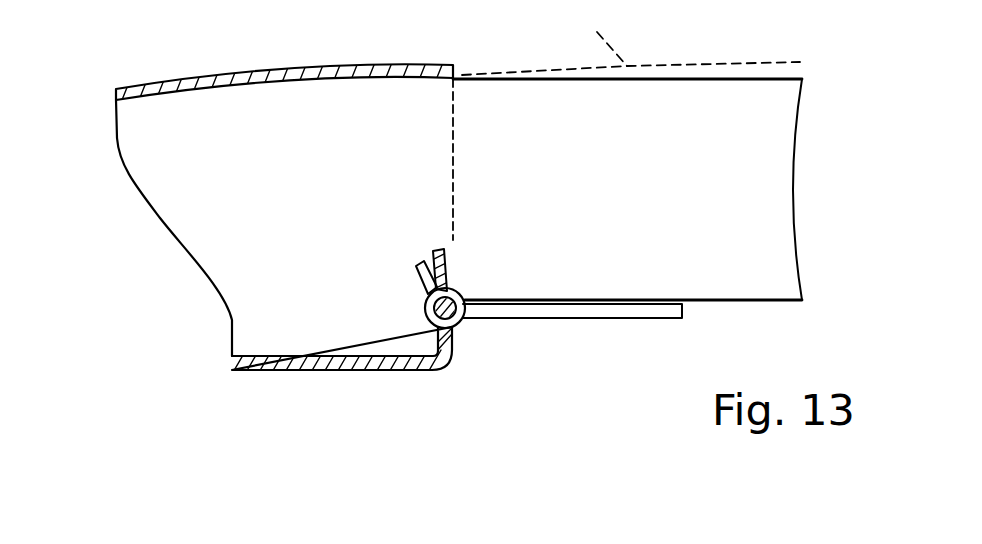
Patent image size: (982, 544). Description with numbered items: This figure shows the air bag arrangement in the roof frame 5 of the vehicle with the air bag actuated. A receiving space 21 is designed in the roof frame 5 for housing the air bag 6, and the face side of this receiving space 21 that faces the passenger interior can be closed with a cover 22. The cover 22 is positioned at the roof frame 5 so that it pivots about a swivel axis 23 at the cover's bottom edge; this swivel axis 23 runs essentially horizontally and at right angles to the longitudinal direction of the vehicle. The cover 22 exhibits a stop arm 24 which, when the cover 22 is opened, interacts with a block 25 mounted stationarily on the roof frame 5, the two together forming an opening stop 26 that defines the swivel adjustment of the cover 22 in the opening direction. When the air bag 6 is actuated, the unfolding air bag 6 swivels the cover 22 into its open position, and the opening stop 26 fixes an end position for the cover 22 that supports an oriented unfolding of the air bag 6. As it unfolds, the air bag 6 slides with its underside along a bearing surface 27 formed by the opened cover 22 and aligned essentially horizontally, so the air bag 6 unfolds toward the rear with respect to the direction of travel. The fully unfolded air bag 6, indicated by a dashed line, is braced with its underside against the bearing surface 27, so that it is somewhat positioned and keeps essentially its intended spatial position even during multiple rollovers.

The roof frame 5 is at (282, 362).
The air bag 6 is at (612, 92).
The receiving space 21 is at (288, 204).
The cover 22 is at (612, 315).
The swivel axis 23 is at (463, 316).
The stop arm 24 is at (418, 268).
The block 25 is at (447, 258).
The opening stop 26 is at (395, 298).
The bearing surface 27 is at (593, 302).